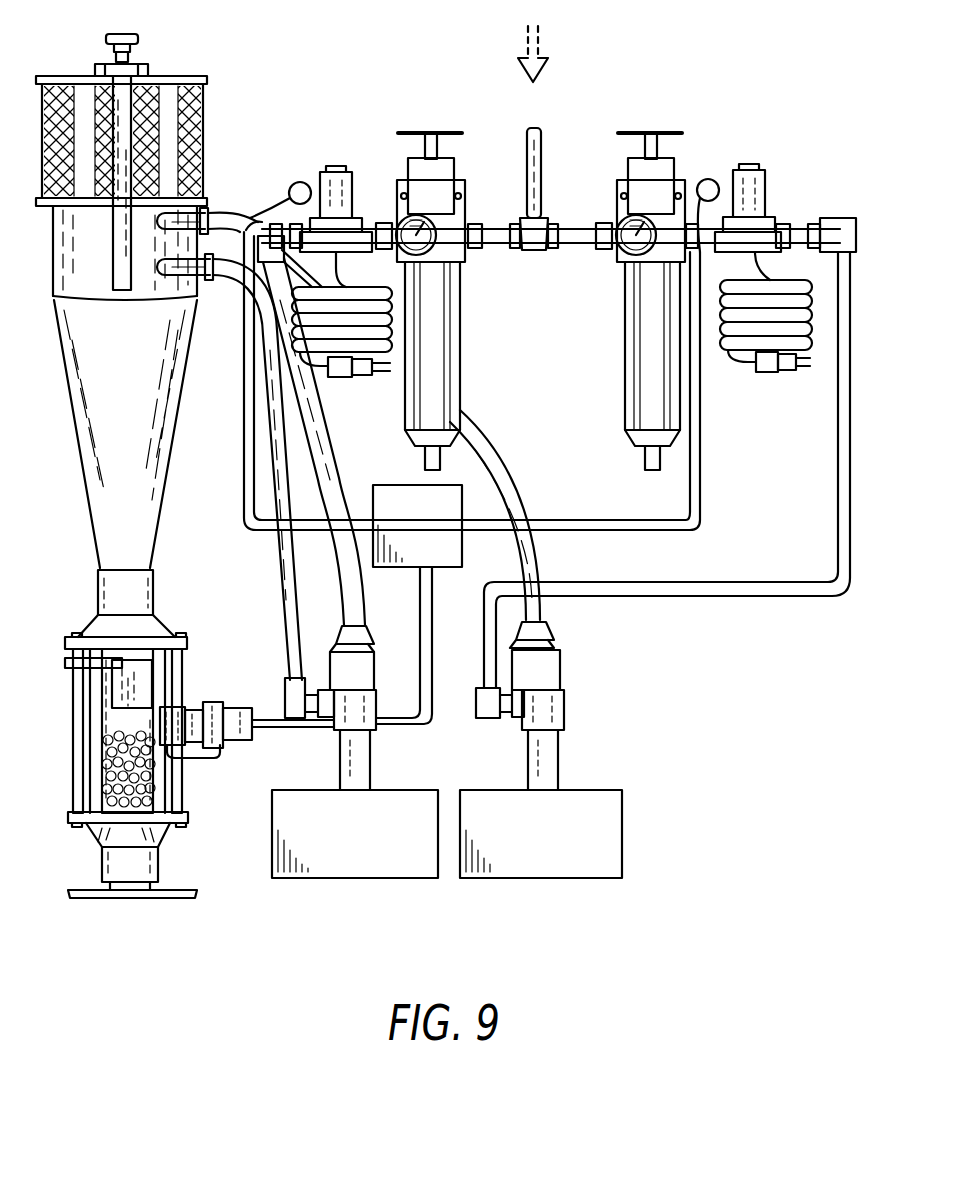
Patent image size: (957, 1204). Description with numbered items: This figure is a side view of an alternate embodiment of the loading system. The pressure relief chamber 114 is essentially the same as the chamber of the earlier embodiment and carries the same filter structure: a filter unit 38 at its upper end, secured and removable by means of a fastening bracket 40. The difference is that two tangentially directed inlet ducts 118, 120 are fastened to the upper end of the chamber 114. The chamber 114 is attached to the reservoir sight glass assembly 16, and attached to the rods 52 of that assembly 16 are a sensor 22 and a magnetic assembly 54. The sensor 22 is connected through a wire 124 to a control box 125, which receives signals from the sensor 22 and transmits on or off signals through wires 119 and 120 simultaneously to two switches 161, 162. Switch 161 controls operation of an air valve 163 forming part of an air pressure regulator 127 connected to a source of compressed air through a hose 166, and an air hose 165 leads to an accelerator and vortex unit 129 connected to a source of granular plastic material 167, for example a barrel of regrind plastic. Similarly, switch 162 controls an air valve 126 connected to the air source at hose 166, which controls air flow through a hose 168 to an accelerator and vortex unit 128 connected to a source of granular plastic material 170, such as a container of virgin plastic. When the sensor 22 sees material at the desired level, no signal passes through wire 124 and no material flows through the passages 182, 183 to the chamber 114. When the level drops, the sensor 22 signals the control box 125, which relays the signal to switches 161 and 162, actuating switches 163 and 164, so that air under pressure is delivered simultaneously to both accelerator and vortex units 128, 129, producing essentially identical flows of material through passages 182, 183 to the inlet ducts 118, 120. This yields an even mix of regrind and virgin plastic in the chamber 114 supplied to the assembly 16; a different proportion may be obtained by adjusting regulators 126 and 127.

The fastening bracket 40 is at (133, 60).
The filter unit 38 is at (208, 134).
The inlet duct 120 is at (206, 213).
The inlet duct 118 is at (213, 298).
The pressure relief chamber 114 is at (156, 498).
The hose 168 is at (278, 460).
The passage 182 is at (332, 606).
The accelerator and vortex unit 128 is at (344, 720).
The source of granular plastic material 170 is at (348, 878).
The control box 125 is at (404, 484).
The wire 124 is at (430, 726).
The passage 183 is at (519, 498).
The accelerator and vortex unit 129 is at (566, 718).
The source of granular plastic material 167 is at (532, 878).
The air hose 165 is at (838, 470).
The wire 119 is at (618, 528).
The switch 164 is at (354, 194).
The switch 162 is at (290, 183).
The air valve 126 is at (460, 270).
The hose 166 is at (541, 148).
The air pressure regulator 127 is at (618, 345).
The air valve 163 is at (766, 188).
The switch 161 is at (699, 181).
The reservoir sight glass assembly 16 is at (194, 662).
The magnetic assembly 54 is at (70, 660).
The rods 52 is at (72, 758).
The sensor 22 is at (192, 706).